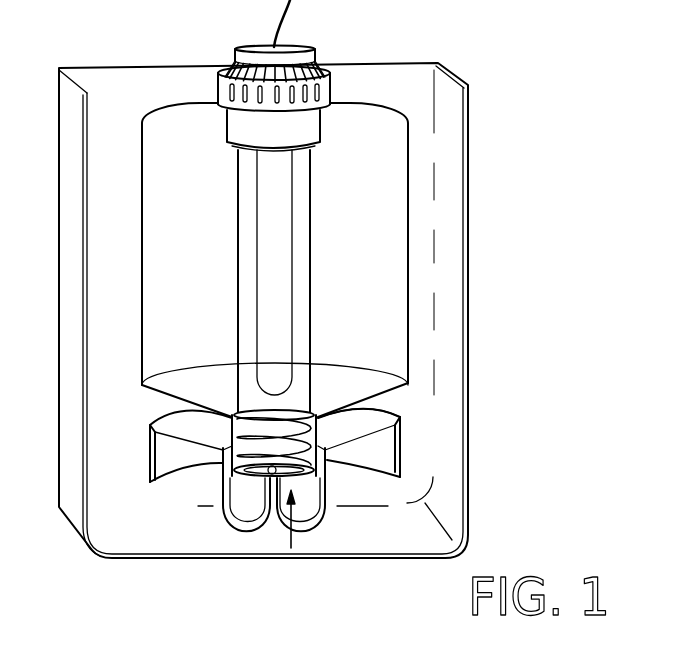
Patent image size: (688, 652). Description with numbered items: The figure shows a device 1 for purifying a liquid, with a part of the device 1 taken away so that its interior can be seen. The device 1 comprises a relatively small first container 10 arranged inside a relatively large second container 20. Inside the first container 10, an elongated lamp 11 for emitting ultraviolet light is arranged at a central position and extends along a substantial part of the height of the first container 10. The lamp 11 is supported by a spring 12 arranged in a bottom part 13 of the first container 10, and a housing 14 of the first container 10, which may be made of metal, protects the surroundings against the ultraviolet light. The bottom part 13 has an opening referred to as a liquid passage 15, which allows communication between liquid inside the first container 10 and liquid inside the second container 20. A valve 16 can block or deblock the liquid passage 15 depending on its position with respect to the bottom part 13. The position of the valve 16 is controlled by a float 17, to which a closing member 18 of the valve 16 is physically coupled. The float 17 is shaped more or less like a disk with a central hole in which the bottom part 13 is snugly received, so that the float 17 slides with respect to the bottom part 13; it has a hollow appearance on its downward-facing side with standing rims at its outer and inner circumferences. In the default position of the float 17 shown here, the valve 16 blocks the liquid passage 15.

The device for purifying a liquid 1 is at (309, 300).
The first container 10 is at (388, 183).
The lamp 11 is at (310, 307).
The spring 12 is at (223, 449).
The bottom part 13 is at (400, 417).
The housing 14 is at (410, 230).
The liquid passage 15 is at (293, 545).
The valve 16 is at (232, 467).
The float 17 is at (400, 462).
The closing member 18 is at (232, 467).
The second container 20 is at (455, 292).